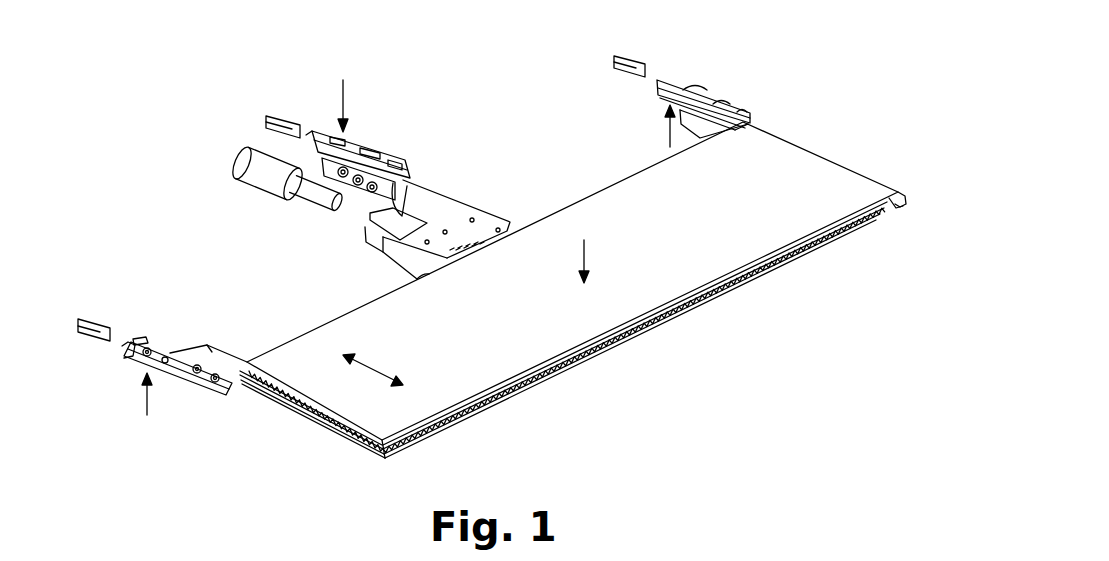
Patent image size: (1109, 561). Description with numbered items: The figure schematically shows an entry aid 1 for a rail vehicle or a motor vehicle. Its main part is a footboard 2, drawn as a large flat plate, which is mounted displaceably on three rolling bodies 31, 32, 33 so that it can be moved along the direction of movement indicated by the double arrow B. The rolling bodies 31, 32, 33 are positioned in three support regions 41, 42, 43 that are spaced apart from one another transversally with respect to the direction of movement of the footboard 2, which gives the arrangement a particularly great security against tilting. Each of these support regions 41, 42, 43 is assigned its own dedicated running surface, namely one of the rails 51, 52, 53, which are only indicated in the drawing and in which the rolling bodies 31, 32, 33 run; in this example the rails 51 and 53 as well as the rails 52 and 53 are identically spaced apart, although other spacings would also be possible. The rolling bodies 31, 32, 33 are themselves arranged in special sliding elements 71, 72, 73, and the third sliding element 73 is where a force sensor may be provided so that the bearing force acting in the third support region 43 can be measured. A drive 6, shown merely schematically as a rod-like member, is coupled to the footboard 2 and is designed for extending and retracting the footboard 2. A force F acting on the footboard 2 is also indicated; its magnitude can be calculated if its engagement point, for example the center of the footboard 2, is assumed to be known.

The entry aid 1 is at (817, 40).
The footboard 2 is at (820, 173).
The drive 6 is at (262, 173).
The rolling body 31 is at (157, 345).
The rolling body 32 is at (687, 85).
The rolling body 33 is at (345, 138).
The support region 41 is at (152, 412).
The support region 42 is at (652, 128).
The third support region 43 is at (338, 91).
The rail 51 is at (97, 322).
The rail 52 is at (632, 57).
The rail 53 is at (290, 122).
The sliding element 71 is at (217, 390).
The sliding element 72 is at (737, 122).
The third sliding element 73 is at (385, 158).